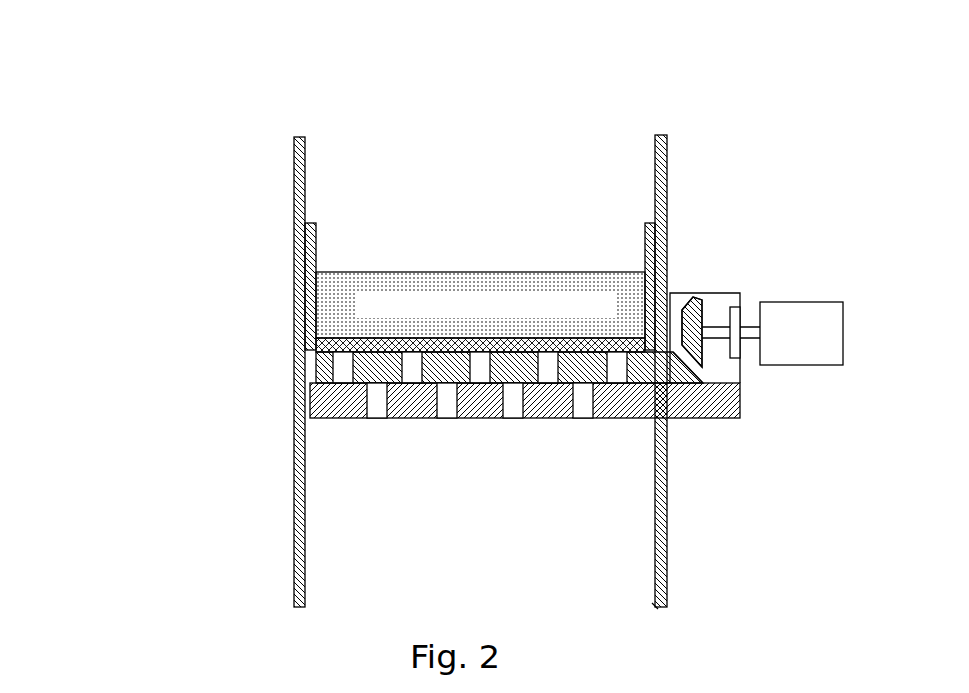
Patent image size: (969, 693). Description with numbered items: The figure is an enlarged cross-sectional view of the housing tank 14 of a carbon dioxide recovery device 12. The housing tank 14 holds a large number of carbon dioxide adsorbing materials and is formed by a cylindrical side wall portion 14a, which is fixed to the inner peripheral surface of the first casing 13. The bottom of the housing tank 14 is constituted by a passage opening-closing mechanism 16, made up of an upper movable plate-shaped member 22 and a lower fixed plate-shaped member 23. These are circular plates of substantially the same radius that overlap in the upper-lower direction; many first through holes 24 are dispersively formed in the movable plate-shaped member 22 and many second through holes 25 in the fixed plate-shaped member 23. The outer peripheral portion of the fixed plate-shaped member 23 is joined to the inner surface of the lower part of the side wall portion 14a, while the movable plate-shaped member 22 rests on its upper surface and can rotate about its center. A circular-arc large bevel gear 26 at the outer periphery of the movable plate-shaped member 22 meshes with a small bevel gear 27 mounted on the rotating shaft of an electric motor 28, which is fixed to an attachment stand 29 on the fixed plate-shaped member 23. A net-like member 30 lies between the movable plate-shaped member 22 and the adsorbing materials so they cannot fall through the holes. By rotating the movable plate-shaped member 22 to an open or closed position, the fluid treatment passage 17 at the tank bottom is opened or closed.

The adsorption device 12 is at (381, 91).
The first casing 13 is at (669, 172).
The housing tank 14 is at (320, 230).
The side wall portion 14a is at (320, 255).
The passage opening-closing mechanism 16 is at (178, 332).
The fluid treatment passage 17 is at (590, 518).
The movable plate-shaped member 22 is at (320, 363).
The fixed plate-shaped member 23 is at (318, 405).
The first through holes 24 is at (412, 375).
The second through holes 25 is at (447, 415).
The large bevel gear 26 is at (708, 368).
The small bevel gear 27 is at (690, 298).
The electric motor 28 is at (790, 302).
The attachment stand 29 is at (742, 405).
The net-like member 30 is at (316, 345).